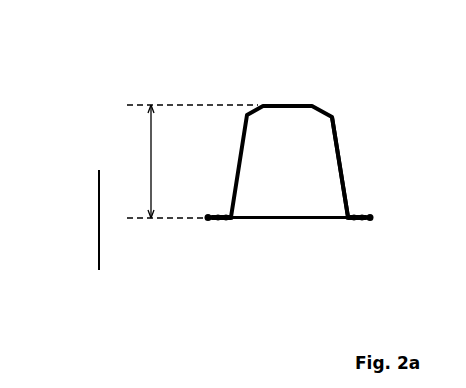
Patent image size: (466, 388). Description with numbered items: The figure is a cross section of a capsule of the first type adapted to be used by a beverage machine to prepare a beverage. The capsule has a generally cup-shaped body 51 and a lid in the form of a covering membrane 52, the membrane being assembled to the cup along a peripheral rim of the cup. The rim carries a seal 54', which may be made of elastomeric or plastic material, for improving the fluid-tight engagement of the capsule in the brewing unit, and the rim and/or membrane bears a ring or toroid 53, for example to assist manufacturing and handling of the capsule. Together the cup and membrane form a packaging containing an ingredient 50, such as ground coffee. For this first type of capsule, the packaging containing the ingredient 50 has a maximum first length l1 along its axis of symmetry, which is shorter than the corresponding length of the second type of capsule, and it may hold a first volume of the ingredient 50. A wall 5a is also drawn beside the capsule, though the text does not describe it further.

The maximum first length l1 is at (189, 161).
The wall of capsule holder 5a is at (99, 209).
The ingredient 50 is at (289, 161).
The cup-shaped body 51 is at (343, 152).
The covering membrane 52 is at (290, 219).
The ring or toroid 53 is at (205, 223).
The seal 54' is at (292, 196).